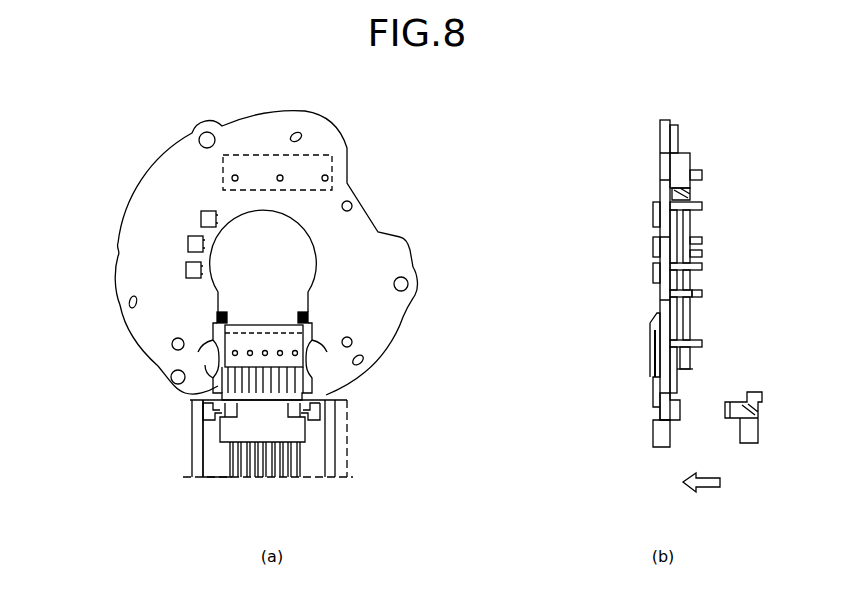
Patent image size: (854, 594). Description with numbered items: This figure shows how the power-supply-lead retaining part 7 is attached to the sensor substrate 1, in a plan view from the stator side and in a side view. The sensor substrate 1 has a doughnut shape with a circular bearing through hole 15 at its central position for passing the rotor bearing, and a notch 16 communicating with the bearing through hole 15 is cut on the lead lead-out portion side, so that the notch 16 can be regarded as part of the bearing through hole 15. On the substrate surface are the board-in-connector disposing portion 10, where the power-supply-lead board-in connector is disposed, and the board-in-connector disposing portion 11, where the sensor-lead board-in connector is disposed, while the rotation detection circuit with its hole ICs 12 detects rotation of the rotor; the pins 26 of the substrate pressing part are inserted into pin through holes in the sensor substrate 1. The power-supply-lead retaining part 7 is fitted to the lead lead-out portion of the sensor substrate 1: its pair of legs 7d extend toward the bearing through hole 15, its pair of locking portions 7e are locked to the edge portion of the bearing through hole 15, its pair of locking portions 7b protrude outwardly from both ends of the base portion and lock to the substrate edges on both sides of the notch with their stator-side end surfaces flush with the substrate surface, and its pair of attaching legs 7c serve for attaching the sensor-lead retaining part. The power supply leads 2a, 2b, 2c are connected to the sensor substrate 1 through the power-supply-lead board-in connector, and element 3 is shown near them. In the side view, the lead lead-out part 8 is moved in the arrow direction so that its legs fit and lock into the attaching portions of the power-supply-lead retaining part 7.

The sensor substrate 1 is at (410, 247).
The board-in-connector disposing portion 10 is at (320, 153).
The hole ICs 12 is at (201, 216).
The pins 26 is at (352, 205).
The notch 16 is at (218, 318).
The bearing through hole 15 is at (317, 273).
The power-supply-lead retaining part 7 is at (290, 428).
The locking portions 7e is at (216, 322).
The legs 7d is at (213, 350).
The board-in-connector disposing portion 11 is at (206, 364).
The locking portions 7b is at (265, 398).
The attaching legs 7c is at (670, 432).
The power supply lead 2a is at (192, 465).
The power supply lead 2b is at (336, 444).
The power supply lead 2c is at (338, 478).
The terminal 3 is at (234, 472).
The lead lead-out part 8 is at (750, 443).